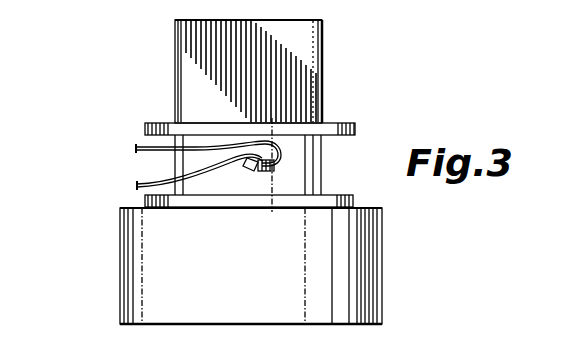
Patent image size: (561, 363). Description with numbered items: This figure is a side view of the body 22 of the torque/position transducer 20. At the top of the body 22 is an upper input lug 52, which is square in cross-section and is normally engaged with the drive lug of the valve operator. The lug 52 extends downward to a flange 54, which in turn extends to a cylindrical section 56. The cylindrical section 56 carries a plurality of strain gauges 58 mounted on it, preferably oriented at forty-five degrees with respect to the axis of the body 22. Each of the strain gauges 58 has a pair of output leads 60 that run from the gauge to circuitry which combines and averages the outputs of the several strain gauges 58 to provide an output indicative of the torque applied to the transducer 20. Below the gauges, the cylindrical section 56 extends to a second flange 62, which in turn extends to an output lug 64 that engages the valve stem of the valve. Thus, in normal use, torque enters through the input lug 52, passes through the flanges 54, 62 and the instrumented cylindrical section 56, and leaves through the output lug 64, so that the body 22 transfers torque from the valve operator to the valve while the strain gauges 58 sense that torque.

The torque/position transducer 20 is at (161, 76).
The body 22 is at (324, 40).
The upper input lug 52 is at (323, 95).
The flange 54 is at (356, 125).
The cylindrical section 56 is at (322, 155).
The strain gauges 58 is at (176, 165).
The output leads 60 is at (136, 146).
The second flange 62 is at (356, 200).
The output lug 64 is at (383, 260).